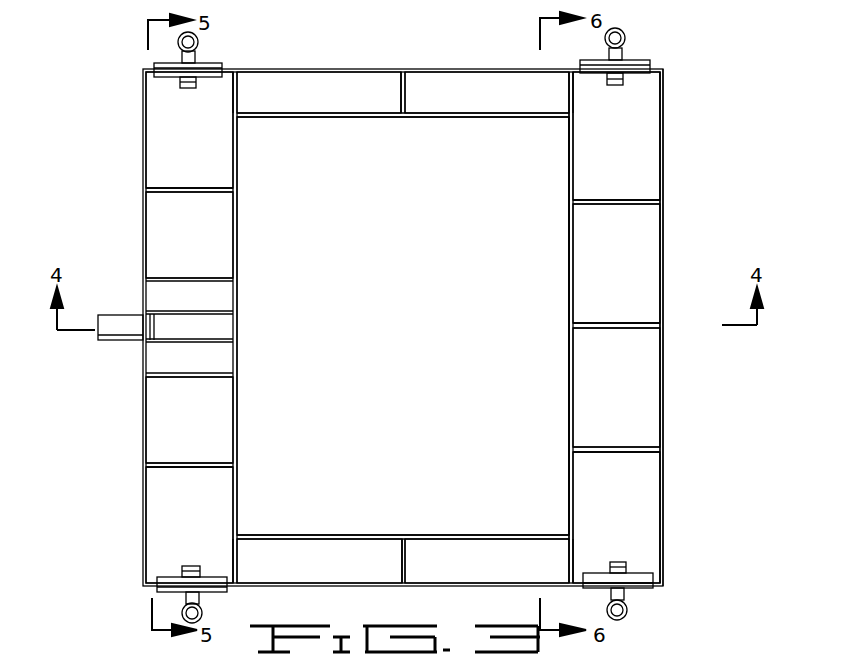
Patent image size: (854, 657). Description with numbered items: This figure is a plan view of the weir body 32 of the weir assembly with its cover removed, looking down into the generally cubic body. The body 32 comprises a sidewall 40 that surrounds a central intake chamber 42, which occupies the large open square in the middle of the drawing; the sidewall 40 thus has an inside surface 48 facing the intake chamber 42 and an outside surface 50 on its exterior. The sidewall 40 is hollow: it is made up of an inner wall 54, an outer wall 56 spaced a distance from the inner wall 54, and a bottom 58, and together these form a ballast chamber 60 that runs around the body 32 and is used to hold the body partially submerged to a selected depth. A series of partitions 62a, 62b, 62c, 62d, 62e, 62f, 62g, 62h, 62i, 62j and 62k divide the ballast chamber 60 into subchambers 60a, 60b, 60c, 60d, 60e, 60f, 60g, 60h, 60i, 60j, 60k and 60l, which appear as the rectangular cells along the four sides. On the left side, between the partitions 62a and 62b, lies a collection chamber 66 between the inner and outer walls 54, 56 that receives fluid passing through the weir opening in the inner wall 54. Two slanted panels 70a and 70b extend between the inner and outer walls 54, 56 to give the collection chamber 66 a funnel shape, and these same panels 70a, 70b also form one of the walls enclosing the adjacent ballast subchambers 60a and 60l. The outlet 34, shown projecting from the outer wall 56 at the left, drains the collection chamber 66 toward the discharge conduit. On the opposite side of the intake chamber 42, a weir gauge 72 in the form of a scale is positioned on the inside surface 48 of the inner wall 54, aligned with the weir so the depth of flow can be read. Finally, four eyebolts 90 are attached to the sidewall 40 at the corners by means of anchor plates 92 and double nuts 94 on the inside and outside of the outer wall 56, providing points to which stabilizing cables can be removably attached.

The weir body 32 is at (664, 108).
The outlet 34 is at (124, 336).
The sidewall 40 is at (662, 210).
The central intake chamber 42 is at (428, 312).
The inside surface 48 is at (568, 222).
The outside surface 50 is at (662, 265).
The inner wall 54 is at (237, 200).
The outer wall 56 is at (143, 210).
The bottom 58 is at (630, 340).
The ballast chamber 60 is at (632, 368).
The ballast subchamber 60a is at (215, 237).
The ballast subchamber 60b is at (215, 160).
The ballast subchamber 60c is at (345, 80).
The ballast subchamber 60d is at (448, 82).
The ballast subchamber 60e is at (590, 170).
The ballast subchamber 60f is at (590, 248).
The ballast subchamber 60g is at (590, 395).
The ballast subchamber 60h is at (590, 478).
The ballast subchamber 60i is at (492, 562).
The ballast subchamber 60j is at (280, 562).
The ballast subchamber 60k is at (217, 500).
The ballast subchamber 60l is at (217, 408).
The partition 62a is at (187, 188).
The partition 62b is at (193, 468).
The partition 62c is at (232, 555).
The partition 62d is at (408, 558).
The partition 62e is at (577, 548).
The partition 62f is at (620, 452).
The partition 62g is at (588, 323).
The partition 62h is at (615, 200).
The partition 62i is at (572, 100).
The partition 62j is at (401, 90).
The partition 62k is at (237, 98).
The collection chamber 66 is at (217, 328).
The slanted panel 70a is at (218, 295).
The slanted panel 70b is at (207, 362).
The weir gauge 72 is at (568, 312).
The eyebolt 90 is at (628, 613).
The anchor plate 92 is at (645, 590).
The double nuts 94 is at (622, 568).